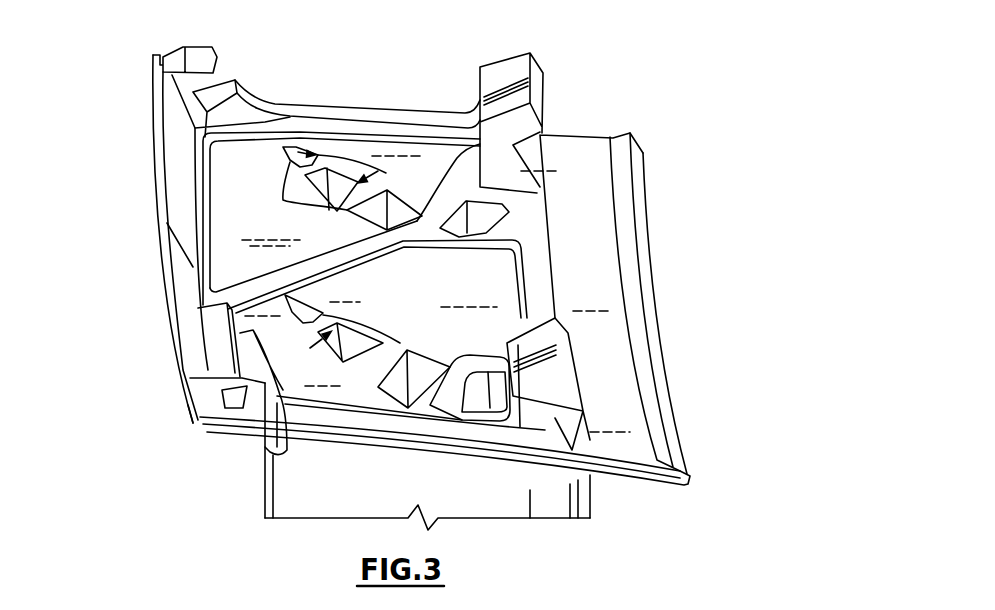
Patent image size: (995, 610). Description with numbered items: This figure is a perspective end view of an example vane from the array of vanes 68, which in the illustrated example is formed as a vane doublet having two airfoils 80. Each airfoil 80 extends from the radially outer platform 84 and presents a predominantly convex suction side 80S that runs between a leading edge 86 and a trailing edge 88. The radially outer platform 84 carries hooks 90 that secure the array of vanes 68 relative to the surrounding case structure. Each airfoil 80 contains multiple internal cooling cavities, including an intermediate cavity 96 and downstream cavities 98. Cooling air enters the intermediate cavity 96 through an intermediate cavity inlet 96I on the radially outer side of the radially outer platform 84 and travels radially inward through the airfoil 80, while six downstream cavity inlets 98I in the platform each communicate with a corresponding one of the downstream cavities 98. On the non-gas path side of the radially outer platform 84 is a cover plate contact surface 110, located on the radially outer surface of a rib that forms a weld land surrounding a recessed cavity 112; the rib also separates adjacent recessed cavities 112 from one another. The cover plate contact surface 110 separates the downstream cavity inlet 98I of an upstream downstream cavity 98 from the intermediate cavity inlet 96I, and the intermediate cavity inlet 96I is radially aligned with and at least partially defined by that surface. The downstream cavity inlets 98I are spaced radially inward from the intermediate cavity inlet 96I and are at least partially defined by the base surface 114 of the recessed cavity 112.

The array of vanes 68 is at (604, 88).
The airfoil 80 is at (558, 517).
The suction side 80S is at (477, 512).
The radially outer platform 84 is at (193, 430).
The leading edge 86 is at (588, 503).
The trailing edge 88 is at (263, 497).
The hook 90 is at (215, 53).
The intermediate cavity 96 is at (490, 214).
The intermediate cavity inlet 96I is at (458, 237).
The downstream cavity 98 is at (395, 184).
The downstream cavity inlet 98I is at (303, 207).
The cover plate contact surface 110 is at (197, 173).
The recessed cavity 112 is at (214, 231).
The base surface 114 is at (370, 153).